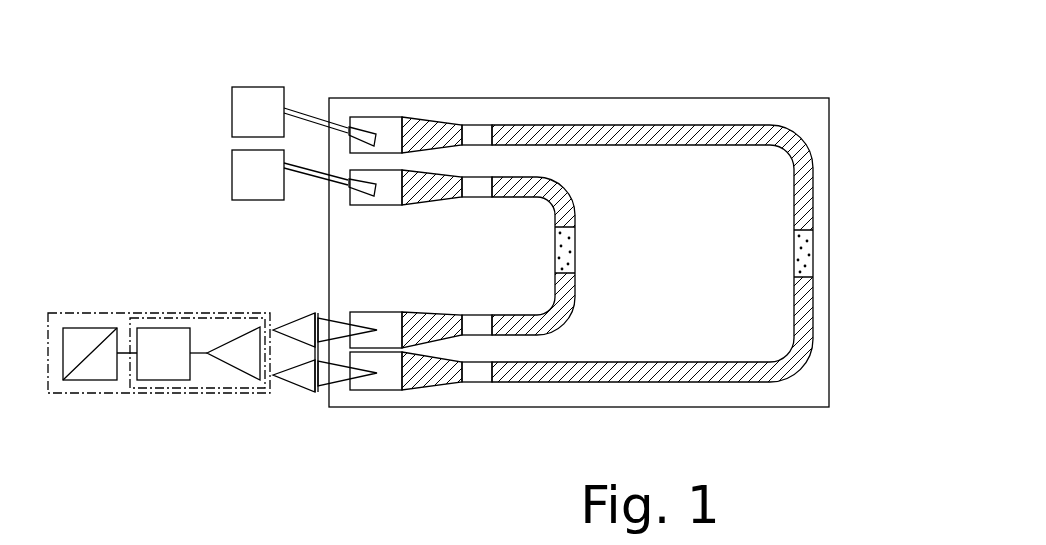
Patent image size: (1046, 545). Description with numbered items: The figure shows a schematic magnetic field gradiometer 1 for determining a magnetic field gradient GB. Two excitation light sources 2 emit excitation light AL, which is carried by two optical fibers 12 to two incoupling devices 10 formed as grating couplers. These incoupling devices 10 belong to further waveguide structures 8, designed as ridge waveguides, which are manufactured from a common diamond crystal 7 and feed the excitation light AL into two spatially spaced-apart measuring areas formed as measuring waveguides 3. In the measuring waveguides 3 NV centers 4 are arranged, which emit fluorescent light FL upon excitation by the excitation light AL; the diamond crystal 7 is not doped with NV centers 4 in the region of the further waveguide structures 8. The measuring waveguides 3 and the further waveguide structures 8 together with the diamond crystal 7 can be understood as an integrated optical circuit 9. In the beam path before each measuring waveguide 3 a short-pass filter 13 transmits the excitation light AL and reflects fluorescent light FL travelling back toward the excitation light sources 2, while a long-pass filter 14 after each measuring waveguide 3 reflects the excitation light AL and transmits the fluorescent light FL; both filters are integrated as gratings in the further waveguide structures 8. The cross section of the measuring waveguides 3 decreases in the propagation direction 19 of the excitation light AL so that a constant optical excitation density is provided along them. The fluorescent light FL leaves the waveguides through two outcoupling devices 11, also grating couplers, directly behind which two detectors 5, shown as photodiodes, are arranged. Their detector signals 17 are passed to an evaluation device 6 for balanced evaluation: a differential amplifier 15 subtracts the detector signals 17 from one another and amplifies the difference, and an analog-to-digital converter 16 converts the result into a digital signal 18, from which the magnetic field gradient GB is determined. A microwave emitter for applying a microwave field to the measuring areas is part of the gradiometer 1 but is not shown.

The magnetic field gradiometer 1 is at (140, 105).
The excitation light source 2 is at (232, 162).
The measuring waveguide 3 is at (720, 177).
The NV centers 4 is at (577, 252).
The detector 5 is at (297, 318).
The evaluation device 6 is at (138, 393).
The diamond crystal 7 is at (579, 212).
The further waveguide structures 8 is at (645, 227).
The integrated optical circuit 9 is at (763, 98).
The incoupling device 10 is at (391, 185).
The outcoupling device 11 is at (383, 378).
The optical fiber 12 is at (309, 176).
The short-pass filter 13 is at (482, 183).
The long-pass filter 14 is at (472, 372).
The differential amplifier 15 is at (127, 332).
The analog-to-digital converter 16 is at (75, 328).
The detector signal 17 is at (270, 327).
The digital signal 18 is at (52, 362).
The propagation direction 19 is at (530, 278).
The excitation light AL is at (362, 182).
The fluorescent light FL is at (348, 347).
The magnetic field gradient GB is at (687, 260).